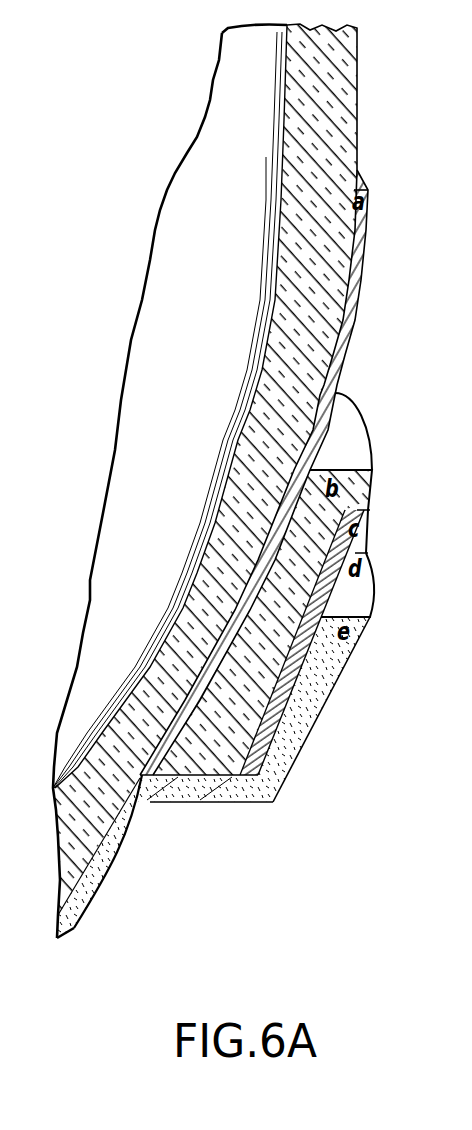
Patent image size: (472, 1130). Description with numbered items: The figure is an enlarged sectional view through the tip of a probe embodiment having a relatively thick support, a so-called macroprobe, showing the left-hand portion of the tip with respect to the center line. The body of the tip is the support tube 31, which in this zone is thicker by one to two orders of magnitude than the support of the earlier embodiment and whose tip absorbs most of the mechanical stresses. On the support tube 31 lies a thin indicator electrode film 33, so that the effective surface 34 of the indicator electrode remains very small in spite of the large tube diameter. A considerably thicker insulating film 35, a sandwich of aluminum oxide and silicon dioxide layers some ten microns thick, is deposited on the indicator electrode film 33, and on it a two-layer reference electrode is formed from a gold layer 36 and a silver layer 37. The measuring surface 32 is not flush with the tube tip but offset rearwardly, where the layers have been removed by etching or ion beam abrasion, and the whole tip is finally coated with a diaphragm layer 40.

The support tube 31 is at (83, 865).
The measuring surface 32 is at (167, 742).
The indicator electrode film 33 is at (192, 742).
The effective surface 34 is at (143, 777).
The insulating film 35 is at (217, 743).
The gold layer 36 is at (257, 720).
The silver layer 37 is at (293, 688).
The diaphragm layer 40 is at (71, 934).